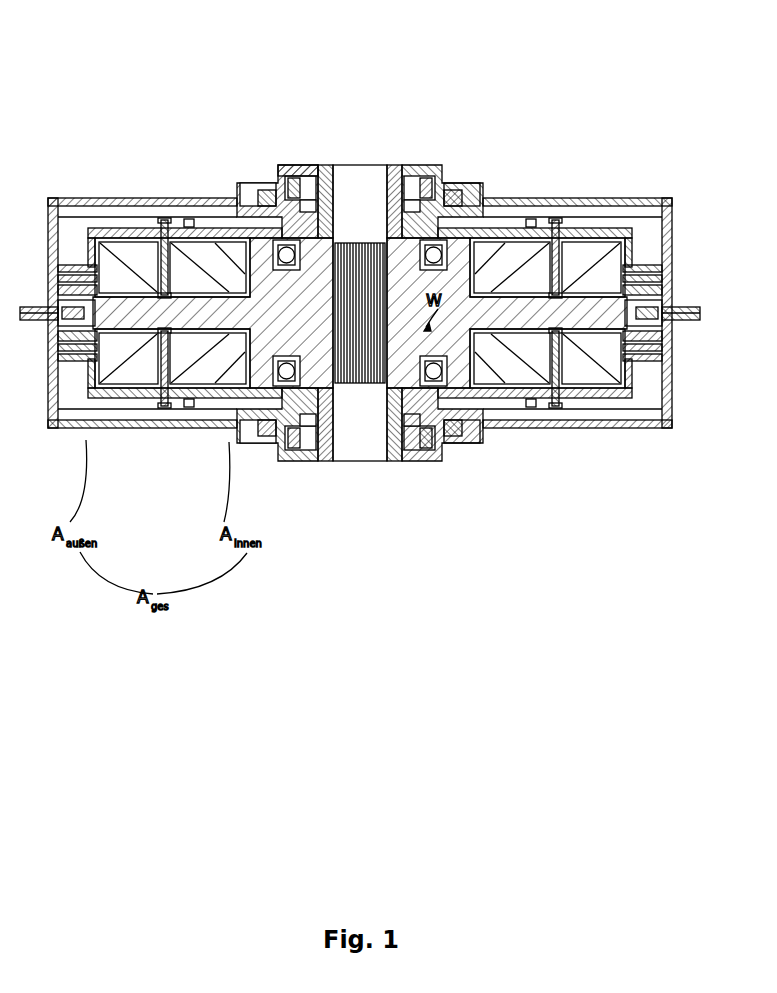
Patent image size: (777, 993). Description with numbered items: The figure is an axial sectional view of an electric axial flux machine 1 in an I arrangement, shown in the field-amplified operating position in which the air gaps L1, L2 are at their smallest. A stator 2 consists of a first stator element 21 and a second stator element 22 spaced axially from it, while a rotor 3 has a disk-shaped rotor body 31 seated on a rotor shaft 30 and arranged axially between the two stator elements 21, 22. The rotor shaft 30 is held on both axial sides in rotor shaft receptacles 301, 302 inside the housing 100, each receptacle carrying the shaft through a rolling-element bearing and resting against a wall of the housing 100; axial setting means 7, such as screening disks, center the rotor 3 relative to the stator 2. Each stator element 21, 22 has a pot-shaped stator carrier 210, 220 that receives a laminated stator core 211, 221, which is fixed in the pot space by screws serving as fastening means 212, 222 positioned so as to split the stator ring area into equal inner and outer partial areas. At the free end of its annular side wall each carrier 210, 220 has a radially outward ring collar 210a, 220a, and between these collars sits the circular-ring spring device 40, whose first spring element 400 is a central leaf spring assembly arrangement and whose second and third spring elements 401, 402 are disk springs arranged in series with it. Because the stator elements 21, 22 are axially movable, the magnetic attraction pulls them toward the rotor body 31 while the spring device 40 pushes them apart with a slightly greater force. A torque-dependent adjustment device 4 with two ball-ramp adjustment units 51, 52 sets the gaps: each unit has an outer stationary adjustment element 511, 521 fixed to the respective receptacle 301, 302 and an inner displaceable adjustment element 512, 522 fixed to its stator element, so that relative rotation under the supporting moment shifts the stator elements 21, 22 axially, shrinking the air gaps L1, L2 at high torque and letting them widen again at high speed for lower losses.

The axial flux machine 1 is at (451, 78).
The stator 2 is at (109, 214).
The rotor 3 is at (259, 265).
The rotor body 31 is at (208, 404).
The rotor shaft 30 is at (271, 165).
The rotor shaft receptacle 301 is at (295, 238).
The rotor shaft receptacle 302 is at (300, 388).
The adjustment device 4 is at (358, 313).
The first adjustment unit 51 is at (447, 180).
The second adjustment unit 52 is at (442, 458).
The stationary adjustment element 511 is at (395, 178).
The displaceable adjustment element 512 is at (245, 183).
The stationary adjustment element 521 is at (308, 452).
The displaceable adjustment element 522 is at (290, 425).
The axial setting means 7 is at (433, 170).
The housing 100 is at (418, 456).
The first stator element 21 is at (572, 250).
The second stator element 22 is at (583, 390).
The stator carrier 210 is at (608, 228).
The stator carrier 220 is at (612, 392).
The ring collar 210a is at (640, 262).
The ring collar 220a is at (640, 362).
The first laminated stator core 211 is at (505, 255).
The second laminated stator core 221 is at (495, 366).
The fastening means 212 is at (552, 222).
The fastening means 222 is at (554, 404).
The spring device 40 is at (677, 292).
The first spring element 400 is at (677, 333).
The second spring element 401 is at (75, 262).
The third spring element 402 is at (78, 353).
The air gap L1 is at (165, 218).
The air gap L2 is at (160, 406).